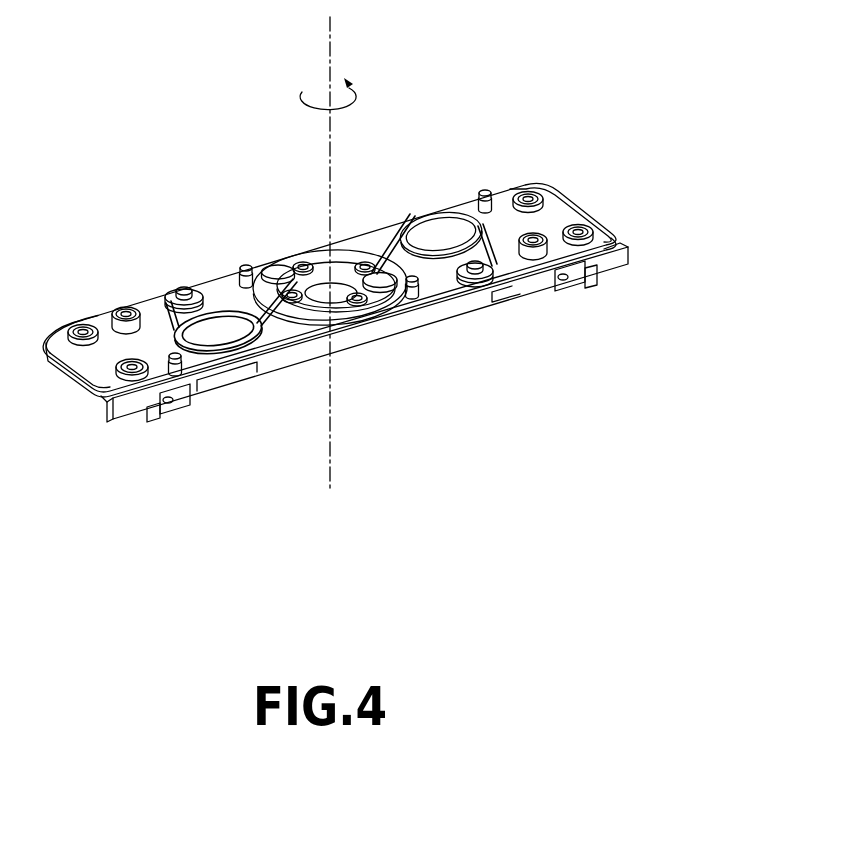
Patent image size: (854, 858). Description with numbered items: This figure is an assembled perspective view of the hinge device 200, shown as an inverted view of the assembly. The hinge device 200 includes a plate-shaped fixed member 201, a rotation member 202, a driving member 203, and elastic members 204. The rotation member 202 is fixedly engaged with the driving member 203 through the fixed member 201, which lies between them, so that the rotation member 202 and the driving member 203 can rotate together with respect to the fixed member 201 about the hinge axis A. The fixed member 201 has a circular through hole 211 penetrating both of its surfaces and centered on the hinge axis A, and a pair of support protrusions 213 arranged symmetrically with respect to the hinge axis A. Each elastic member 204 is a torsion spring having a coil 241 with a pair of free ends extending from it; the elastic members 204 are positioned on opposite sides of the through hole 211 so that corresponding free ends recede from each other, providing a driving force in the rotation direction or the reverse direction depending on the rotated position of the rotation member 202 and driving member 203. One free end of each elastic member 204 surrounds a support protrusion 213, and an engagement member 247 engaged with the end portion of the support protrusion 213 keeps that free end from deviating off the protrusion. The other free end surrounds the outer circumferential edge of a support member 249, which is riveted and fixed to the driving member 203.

The hinge device 200 is at (184, 51).
The fixed member 201 is at (588, 206).
The rotation member 202 is at (636, 267).
The driving member 203 is at (338, 318).
The elastic member 204 is at (162, 315).
The through hole 211 is at (328, 296).
The support protrusion 213 is at (171, 288).
The coil 241 is at (410, 214).
The engagement member 247 is at (167, 303).
The support member 249 is at (273, 266).
The hinge axis A is at (331, 47).